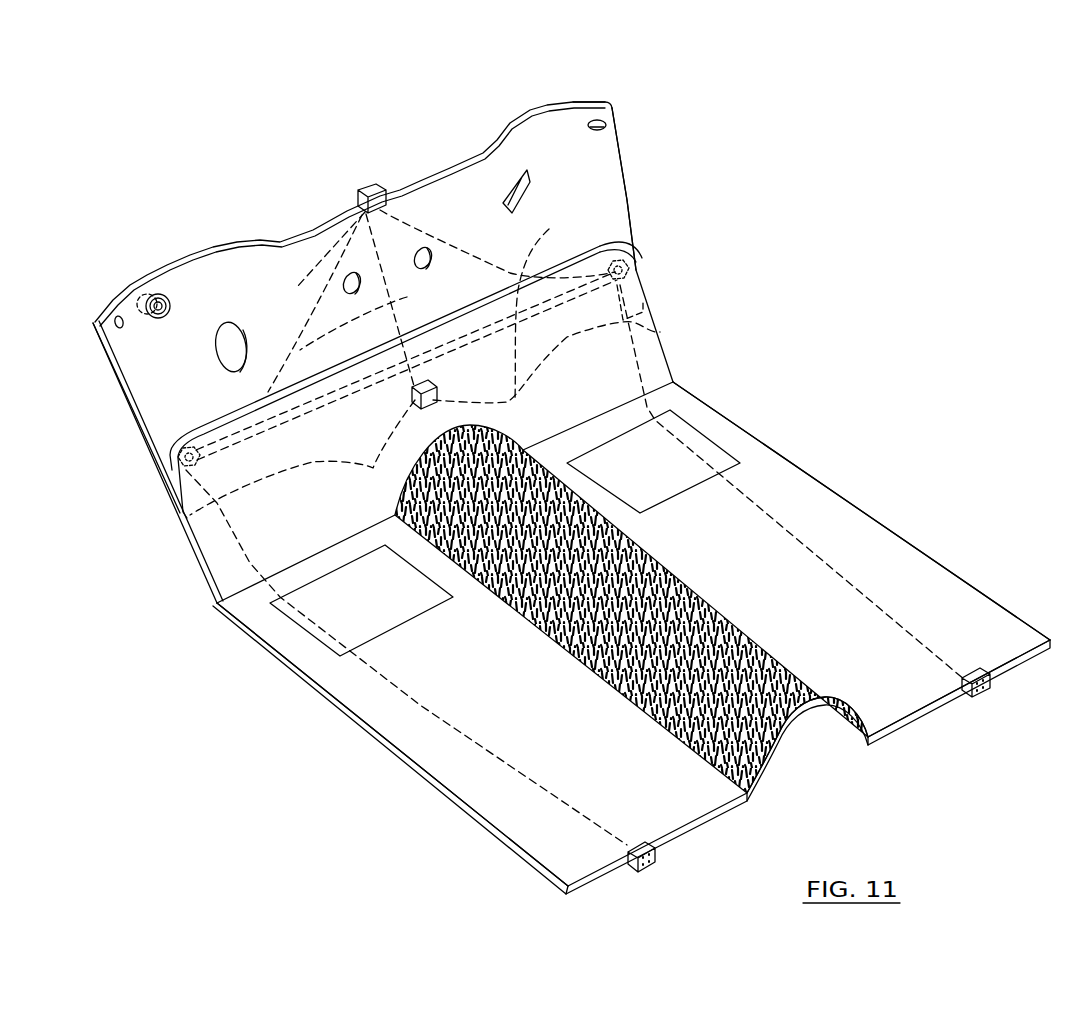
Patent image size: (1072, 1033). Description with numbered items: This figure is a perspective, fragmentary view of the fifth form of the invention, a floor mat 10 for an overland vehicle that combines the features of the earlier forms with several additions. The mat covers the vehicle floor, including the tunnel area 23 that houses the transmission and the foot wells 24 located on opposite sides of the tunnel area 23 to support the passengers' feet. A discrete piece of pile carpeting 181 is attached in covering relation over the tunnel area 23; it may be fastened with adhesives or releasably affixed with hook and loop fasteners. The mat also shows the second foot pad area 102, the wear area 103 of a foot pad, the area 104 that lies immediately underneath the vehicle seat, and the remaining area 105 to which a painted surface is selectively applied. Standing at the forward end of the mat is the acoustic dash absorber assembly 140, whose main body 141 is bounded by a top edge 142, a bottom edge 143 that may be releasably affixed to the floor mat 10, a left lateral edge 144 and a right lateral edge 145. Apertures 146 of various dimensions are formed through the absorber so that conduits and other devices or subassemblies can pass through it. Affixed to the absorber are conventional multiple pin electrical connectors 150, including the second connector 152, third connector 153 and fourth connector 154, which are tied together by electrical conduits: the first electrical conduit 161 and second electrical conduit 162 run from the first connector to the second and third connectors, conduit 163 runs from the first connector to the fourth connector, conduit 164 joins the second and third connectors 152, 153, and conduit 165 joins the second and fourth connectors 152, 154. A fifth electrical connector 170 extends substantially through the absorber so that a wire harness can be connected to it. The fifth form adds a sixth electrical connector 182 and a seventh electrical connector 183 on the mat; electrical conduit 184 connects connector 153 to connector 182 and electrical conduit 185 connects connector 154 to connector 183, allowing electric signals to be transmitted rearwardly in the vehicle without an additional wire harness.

The floor mat 10 is at (908, 524).
The tunnel area 23 is at (742, 660).
The foot wells 24 is at (810, 507).
The second foot pad area 102 is at (694, 438).
The wear area 103 is at (320, 603).
The area underneath the seat 104 is at (957, 593).
The painted surface area 105 is at (847, 535).
The acoustic dash absorber assembly 140 is at (417, 176).
The main body 141 is at (514, 163).
The top edge 142 is at (572, 100).
The bottom edge 143 is at (660, 332).
The left lateral edge 144 is at (129, 400).
The right lateral edge 145 is at (622, 160).
The apertures 146 is at (228, 326).
The multiple pin electrical connectors 150 is at (360, 196).
The second connector 152 is at (414, 385).
The third connector 153 is at (640, 262).
The fourth connector 154 is at (166, 469).
The first electrical conduit 161 is at (407, 297).
The second electrical conduit 162 is at (430, 223).
The electrical conduit 163 is at (313, 261).
The electrical conduit 164 is at (545, 306).
The electrical conduit 165 is at (300, 413).
The fifth electrical connector 170 is at (160, 282).
The pile carpeting 181 is at (642, 628).
The sixth electrical connector 182 is at (990, 680).
The seventh electrical connector 183 is at (648, 868).
The electrical conduit 184 is at (750, 500).
The electrical conduit 185 is at (421, 706).